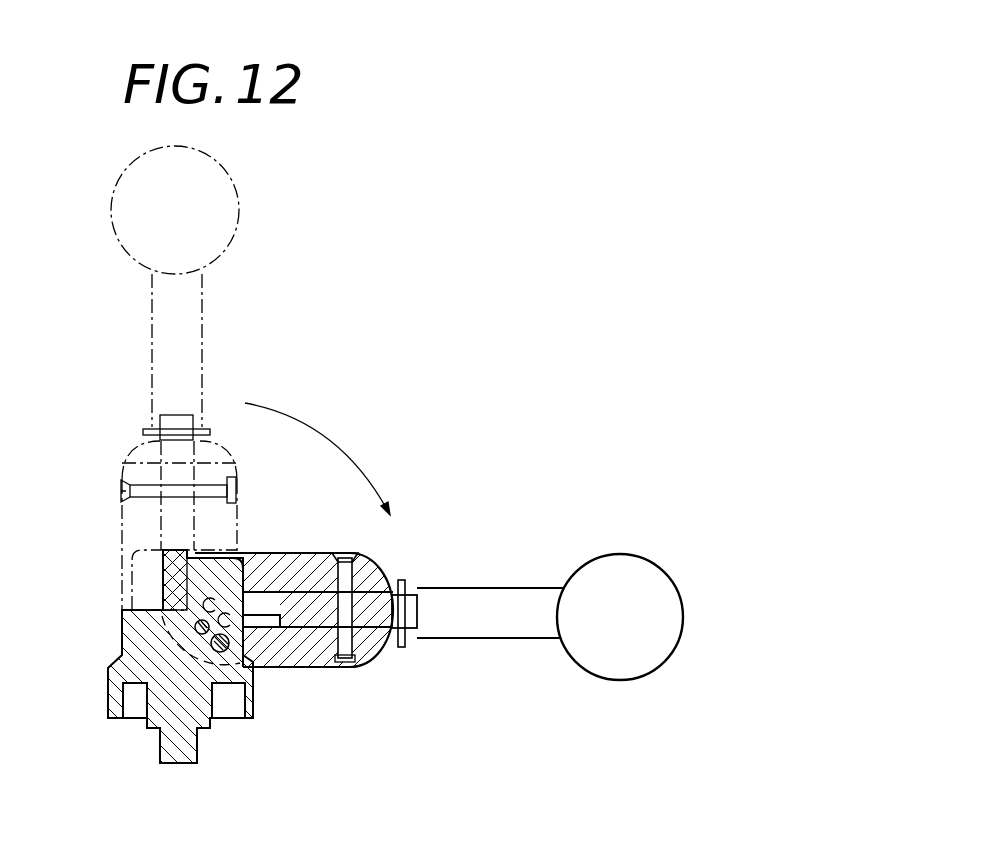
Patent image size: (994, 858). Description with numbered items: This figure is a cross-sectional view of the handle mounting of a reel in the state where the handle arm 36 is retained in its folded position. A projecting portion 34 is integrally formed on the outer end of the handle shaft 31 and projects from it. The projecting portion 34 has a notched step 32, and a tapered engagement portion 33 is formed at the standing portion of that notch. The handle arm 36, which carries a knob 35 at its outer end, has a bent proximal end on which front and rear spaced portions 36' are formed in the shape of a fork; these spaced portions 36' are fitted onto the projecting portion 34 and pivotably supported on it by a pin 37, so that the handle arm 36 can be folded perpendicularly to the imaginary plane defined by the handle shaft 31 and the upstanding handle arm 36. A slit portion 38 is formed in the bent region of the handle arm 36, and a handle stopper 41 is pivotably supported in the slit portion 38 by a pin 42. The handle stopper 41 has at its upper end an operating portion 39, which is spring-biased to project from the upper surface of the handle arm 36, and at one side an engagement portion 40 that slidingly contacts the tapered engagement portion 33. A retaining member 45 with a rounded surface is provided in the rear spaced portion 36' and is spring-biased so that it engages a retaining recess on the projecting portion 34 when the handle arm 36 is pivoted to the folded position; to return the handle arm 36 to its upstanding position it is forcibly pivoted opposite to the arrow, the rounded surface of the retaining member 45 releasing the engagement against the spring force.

The handle shaft 31 is at (197, 752).
The notched step 32 is at (140, 598).
The tapered engagement portion 33 is at (165, 578).
The projecting portion 34 is at (140, 637).
The knob 35 is at (672, 607).
The handle arm 36 is at (490, 588).
The spaced portion 36' is at (277, 571).
The pin 37 is at (200, 630).
The slit portion 38 is at (355, 660).
The operating portion 39 is at (417, 612).
The engagement portion 40 is at (263, 610).
The handle stopper 41 is at (383, 650).
The pin 42 is at (381, 565).
The retaining member 45 is at (275, 642).